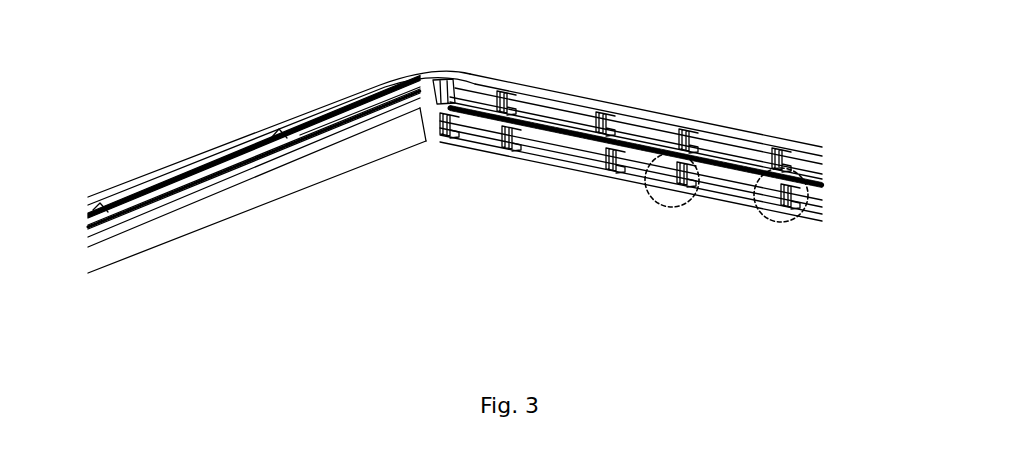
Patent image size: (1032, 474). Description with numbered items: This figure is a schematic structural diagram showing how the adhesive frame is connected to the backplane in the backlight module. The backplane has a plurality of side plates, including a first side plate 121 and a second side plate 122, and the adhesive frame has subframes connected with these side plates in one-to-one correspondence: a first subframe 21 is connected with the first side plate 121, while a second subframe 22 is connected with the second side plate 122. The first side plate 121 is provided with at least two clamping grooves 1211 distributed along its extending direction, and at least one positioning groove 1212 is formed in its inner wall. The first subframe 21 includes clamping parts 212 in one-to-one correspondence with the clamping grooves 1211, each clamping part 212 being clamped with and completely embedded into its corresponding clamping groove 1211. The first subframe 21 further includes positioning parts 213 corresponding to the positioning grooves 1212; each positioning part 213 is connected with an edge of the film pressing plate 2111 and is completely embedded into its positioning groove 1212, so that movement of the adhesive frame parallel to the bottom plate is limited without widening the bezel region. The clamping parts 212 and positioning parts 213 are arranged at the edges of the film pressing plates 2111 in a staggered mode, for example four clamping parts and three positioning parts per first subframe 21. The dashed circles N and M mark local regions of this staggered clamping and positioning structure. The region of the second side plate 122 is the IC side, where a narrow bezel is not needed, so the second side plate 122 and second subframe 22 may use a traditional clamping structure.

The first side plate 121 is at (752, 112).
The clamping groove 1211 is at (507, 96).
The positioning groove 1212 is at (610, 118).
The second side plate 122 is at (216, 128).
The second subframe 22 is at (336, 101).
The first subframe 21 is at (726, 187).
The film pressing plate 2111 is at (577, 134).
The clamping part 212 is at (610, 160).
The positioning part 213 is at (502, 143).
The region N is at (668, 207).
The region M is at (773, 224).